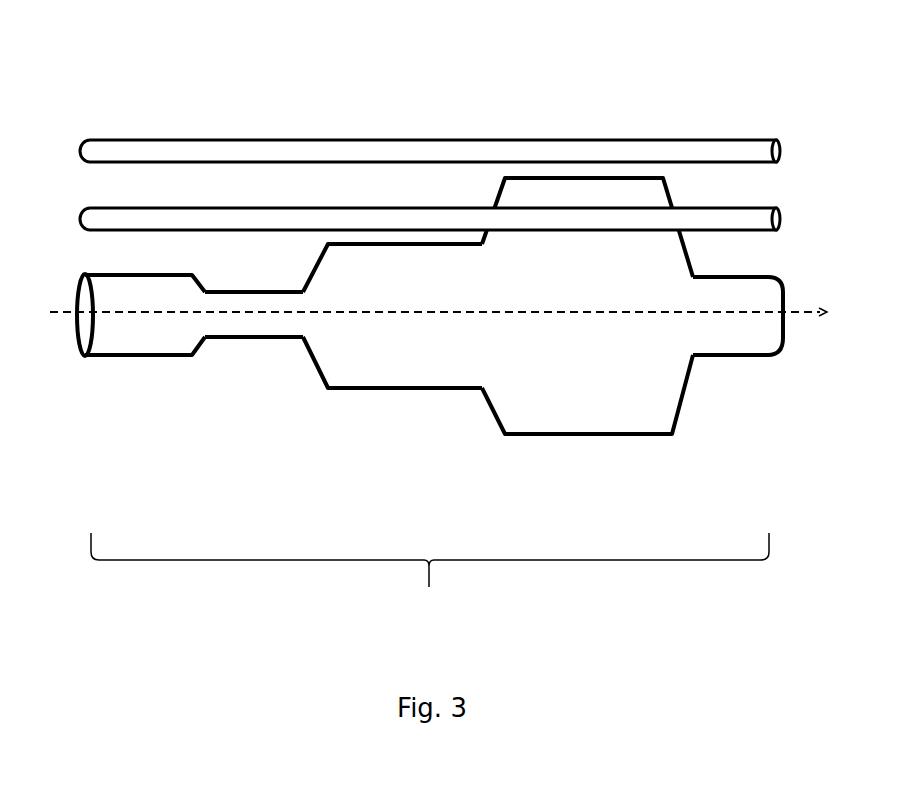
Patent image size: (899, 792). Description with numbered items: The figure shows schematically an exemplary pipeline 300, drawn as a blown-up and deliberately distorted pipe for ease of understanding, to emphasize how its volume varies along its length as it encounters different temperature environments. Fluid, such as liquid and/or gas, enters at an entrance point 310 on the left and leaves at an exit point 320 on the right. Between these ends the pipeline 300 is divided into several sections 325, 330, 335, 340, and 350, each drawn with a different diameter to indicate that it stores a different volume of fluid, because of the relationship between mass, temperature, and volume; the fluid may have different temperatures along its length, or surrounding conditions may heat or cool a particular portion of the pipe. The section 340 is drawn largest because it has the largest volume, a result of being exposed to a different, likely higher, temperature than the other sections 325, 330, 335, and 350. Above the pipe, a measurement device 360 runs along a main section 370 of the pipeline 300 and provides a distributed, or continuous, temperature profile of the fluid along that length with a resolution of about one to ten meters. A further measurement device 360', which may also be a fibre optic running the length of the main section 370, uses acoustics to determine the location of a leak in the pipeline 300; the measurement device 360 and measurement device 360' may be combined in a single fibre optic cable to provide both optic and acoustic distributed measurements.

The pipeline 300 is at (440, 317).
The entrance point 310 is at (63, 337).
The exit point 320 is at (790, 335).
The section 325 is at (140, 277).
The section 330 is at (258, 294).
The section 335 is at (406, 246).
The section 340 is at (582, 180).
The section 350 is at (738, 279).
The measurement device 360 is at (468, 237).
The measurement device 360' is at (463, 127).
The main section 370 is at (430, 577).